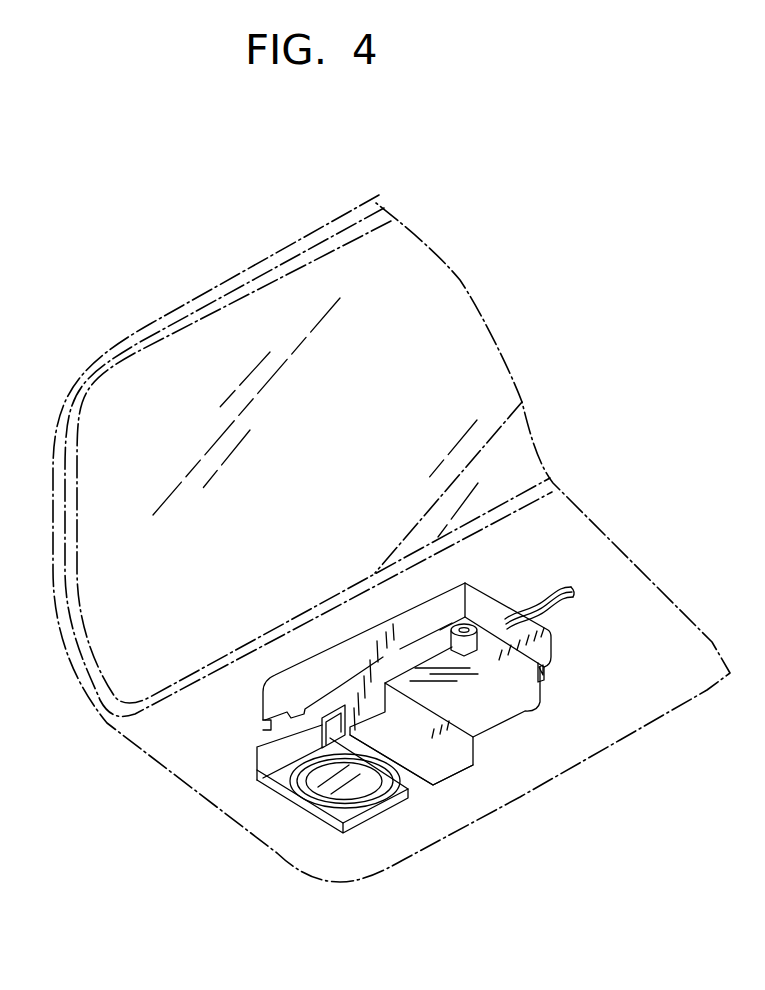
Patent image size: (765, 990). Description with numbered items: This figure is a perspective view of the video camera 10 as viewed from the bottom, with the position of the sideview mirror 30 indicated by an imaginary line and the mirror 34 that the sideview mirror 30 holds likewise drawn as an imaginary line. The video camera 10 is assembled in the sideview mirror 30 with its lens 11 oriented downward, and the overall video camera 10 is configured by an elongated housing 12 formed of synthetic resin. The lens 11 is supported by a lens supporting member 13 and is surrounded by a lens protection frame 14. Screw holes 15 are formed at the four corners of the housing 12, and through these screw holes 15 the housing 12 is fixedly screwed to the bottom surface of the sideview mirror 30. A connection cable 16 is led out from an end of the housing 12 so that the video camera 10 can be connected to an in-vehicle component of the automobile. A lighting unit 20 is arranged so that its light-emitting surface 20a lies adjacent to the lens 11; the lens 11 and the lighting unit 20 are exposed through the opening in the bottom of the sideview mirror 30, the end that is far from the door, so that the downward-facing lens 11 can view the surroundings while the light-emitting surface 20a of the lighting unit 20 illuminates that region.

The video camera 10 is at (287, 696).
The lens 11 is at (323, 790).
The housing 12 is at (428, 646).
The lens supporting member 13 is at (350, 808).
The lens protection frame 14 is at (277, 757).
The screw holes 15 is at (468, 622).
The connection cable 16 is at (582, 600).
The lighting unit 20 is at (447, 742).
The light-emitting surface 20a is at (430, 763).
The sideview mirror 30 is at (291, 245).
The mirror 34 is at (162, 387).